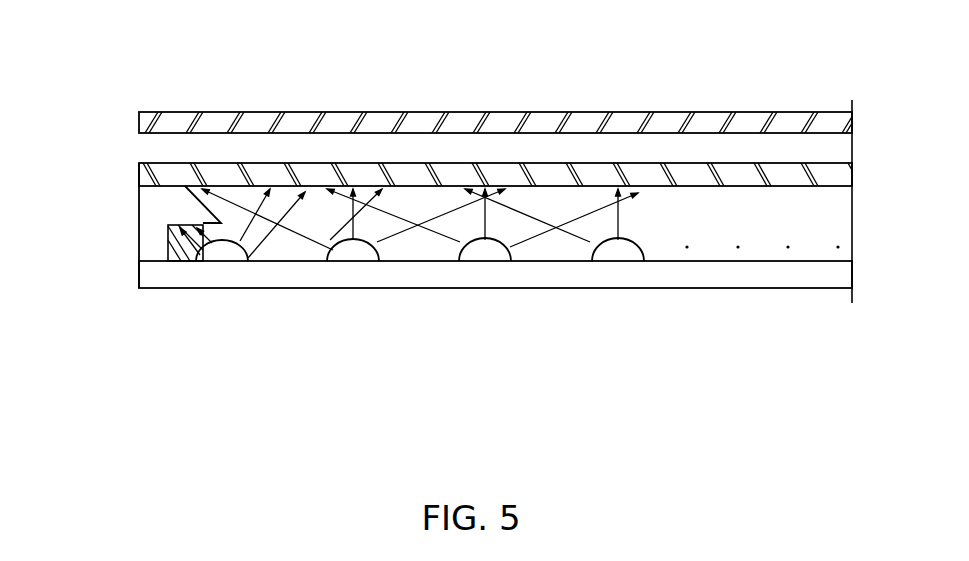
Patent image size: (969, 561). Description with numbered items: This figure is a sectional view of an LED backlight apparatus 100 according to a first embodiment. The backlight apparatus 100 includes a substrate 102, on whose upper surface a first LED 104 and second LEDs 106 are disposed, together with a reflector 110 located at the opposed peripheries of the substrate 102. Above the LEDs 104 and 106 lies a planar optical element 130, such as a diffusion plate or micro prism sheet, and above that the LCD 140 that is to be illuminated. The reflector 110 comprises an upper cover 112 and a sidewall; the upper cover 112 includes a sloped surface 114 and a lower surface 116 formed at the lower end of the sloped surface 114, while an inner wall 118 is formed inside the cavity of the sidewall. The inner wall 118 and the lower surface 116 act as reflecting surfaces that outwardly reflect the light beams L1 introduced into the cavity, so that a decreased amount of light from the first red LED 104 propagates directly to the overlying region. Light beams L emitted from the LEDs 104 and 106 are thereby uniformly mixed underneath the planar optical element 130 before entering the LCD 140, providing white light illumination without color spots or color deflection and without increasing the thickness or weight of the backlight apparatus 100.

The backlight apparatus 100 is at (459, 43).
The substrate 102 is at (785, 282).
The first LED 104 is at (205, 260).
The second LED 106 is at (607, 262).
The reflector 110 is at (130, 237).
The upper cover 112 is at (168, 207).
The sloped surface 114 is at (217, 188).
The lower surface 116 is at (212, 228).
The inner wall 118 is at (145, 247).
The planar optical element 130 is at (838, 172).
The LCD 140 is at (795, 122).
The light beams L is at (552, 233).
The light beams introduced into the cavity L1 is at (285, 236).